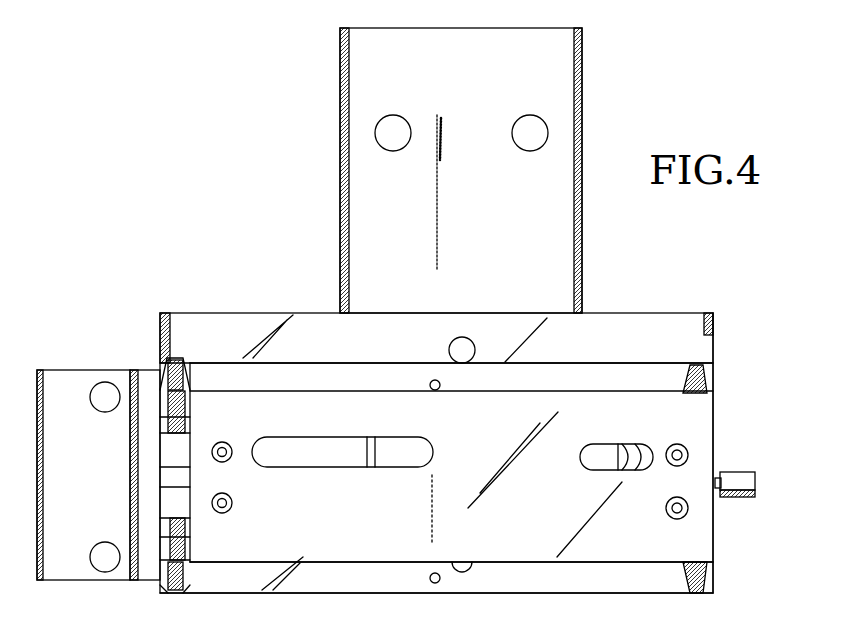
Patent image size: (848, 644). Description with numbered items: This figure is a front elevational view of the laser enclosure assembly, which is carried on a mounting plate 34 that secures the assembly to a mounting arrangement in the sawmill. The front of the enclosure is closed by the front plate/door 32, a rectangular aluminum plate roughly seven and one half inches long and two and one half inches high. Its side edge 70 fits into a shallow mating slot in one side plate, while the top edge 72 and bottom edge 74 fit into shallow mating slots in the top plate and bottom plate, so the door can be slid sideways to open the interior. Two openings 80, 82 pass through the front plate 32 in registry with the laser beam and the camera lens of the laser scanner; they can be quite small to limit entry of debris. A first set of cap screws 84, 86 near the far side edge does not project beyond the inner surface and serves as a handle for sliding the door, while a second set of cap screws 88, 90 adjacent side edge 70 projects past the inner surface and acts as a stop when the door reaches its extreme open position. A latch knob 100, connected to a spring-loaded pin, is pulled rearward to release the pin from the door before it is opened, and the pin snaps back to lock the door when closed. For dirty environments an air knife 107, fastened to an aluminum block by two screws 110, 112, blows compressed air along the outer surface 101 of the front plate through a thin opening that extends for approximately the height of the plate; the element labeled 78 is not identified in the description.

The front plate/door 32 is at (697, 430).
The mounting plate 34 is at (582, 68).
The side edge 70 is at (190, 498).
The top edge 72 is at (560, 393).
The bottom edge 74 is at (580, 565).
The end wall 78 is at (713, 458).
The opening 80 is at (330, 457).
The opening 82 is at (626, 438).
The cap screw 84 is at (688, 452).
The cap screw 86 is at (688, 511).
The cap screw 88 is at (230, 444).
The cap screw 90 is at (232, 507).
The latch knob 100 is at (755, 490).
The outer surface 101 is at (523, 543).
The air knife 107 is at (62, 380).
The screw 110 is at (107, 402).
The screw 112 is at (105, 560).